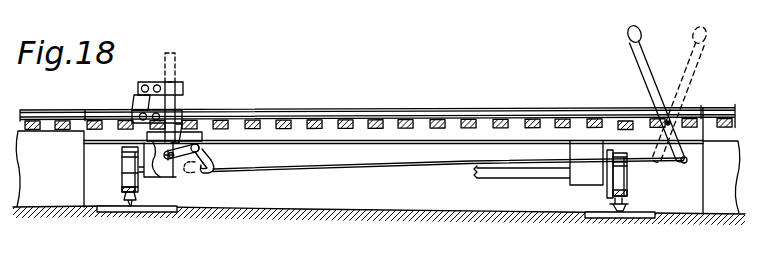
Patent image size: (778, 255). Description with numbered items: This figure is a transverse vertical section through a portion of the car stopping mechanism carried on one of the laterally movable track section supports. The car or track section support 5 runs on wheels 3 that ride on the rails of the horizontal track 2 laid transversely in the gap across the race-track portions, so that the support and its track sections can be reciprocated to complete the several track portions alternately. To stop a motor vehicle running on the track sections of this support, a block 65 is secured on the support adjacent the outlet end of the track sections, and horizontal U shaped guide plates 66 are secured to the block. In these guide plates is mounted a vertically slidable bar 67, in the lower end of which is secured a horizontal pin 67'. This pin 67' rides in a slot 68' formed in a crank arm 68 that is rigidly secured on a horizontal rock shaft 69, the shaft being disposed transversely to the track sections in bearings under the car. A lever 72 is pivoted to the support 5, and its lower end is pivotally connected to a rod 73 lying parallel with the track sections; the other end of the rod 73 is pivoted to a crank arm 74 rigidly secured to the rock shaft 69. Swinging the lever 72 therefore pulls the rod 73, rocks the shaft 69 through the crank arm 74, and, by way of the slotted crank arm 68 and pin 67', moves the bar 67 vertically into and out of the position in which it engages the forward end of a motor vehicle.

The horizontal track 2 is at (127, 207).
The wheel 3 is at (622, 186).
The car or track section support 5 is at (629, 128).
The block 65 is at (145, 107).
The U shaped guide plate 66 is at (152, 111).
The vertically slidable bar 67 is at (188, 91).
The horizontal pin 67' is at (156, 193).
The crank arm 68 is at (212, 119).
The slot 68' is at (193, 178).
The horizontal rock shaft 69 is at (204, 150).
The lever 72 is at (645, 52).
The rod 73 is at (511, 150).
The crank arm 74 is at (207, 156).